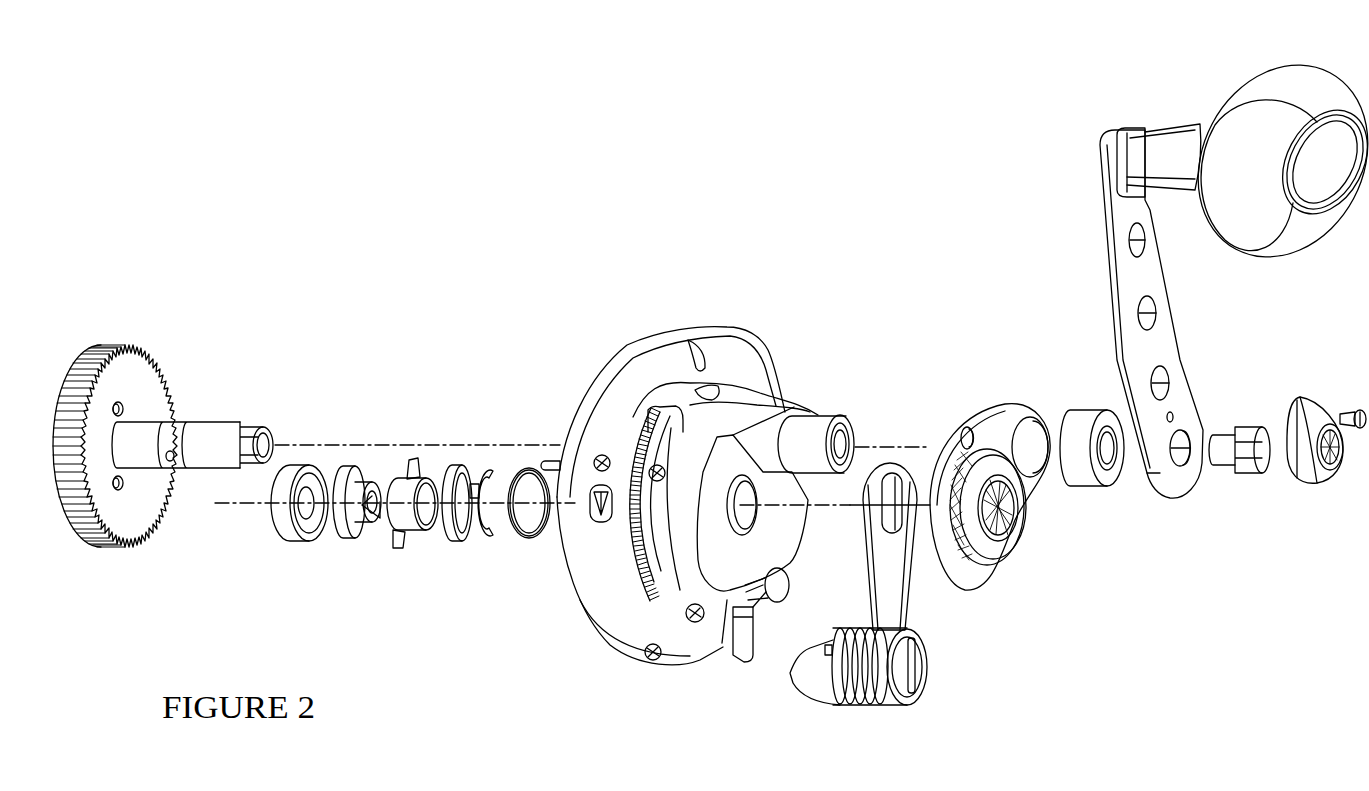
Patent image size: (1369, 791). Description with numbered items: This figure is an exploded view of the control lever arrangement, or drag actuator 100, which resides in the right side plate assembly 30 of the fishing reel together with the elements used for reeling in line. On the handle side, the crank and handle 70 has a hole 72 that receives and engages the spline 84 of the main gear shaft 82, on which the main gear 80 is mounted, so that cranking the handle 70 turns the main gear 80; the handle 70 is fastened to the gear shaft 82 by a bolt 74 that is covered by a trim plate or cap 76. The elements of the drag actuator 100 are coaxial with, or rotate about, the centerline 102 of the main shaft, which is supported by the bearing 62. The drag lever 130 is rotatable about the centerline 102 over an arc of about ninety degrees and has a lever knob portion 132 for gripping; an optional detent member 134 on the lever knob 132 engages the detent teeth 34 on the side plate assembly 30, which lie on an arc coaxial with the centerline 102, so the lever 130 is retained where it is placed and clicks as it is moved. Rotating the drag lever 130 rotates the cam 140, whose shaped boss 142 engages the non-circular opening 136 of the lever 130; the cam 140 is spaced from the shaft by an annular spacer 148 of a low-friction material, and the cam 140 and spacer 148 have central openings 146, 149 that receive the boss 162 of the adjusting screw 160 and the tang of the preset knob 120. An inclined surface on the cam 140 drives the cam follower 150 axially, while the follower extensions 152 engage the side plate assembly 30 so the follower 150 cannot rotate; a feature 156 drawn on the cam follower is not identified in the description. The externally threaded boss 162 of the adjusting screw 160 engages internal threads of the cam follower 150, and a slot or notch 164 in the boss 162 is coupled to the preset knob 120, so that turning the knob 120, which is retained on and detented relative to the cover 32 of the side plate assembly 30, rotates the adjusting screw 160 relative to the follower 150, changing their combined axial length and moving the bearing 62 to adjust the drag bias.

The drag actuator 100 is at (782, 282).
The right side plate assembly 30 is at (645, 337).
The cover 32 is at (987, 407).
The detent teeth 34 is at (640, 590).
The bearing 62 is at (273, 533).
The crank and handle 70 is at (1105, 280).
The hole 72 is at (1173, 460).
The bolt 74 is at (1247, 473).
The trim plate or cap 76 is at (1305, 480).
The main gear 80 is at (150, 355).
The main gear shaft 82 is at (200, 422).
The spline 84 is at (257, 428).
The centerline 102 is at (222, 505).
The preset knob 120 is at (993, 553).
The drag lever 130 is at (917, 617).
The lever knob portion 132 is at (840, 705).
The detent member 134 is at (830, 646).
The non-circular opening 136 is at (893, 477).
The cam 140 is at (453, 537).
The shaped boss 142 is at (498, 533).
The central opening 146 is at (462, 484).
The annular spacer 148 is at (528, 540).
The central opening 149 is at (528, 487).
The cam follower 150 is at (416, 533).
The extensions 152 is at (408, 462).
The sleeve bore 156 is at (427, 490).
The adjusting screw 160 is at (344, 536).
The boss 162 is at (377, 522).
The slot or notch 164 is at (383, 488).